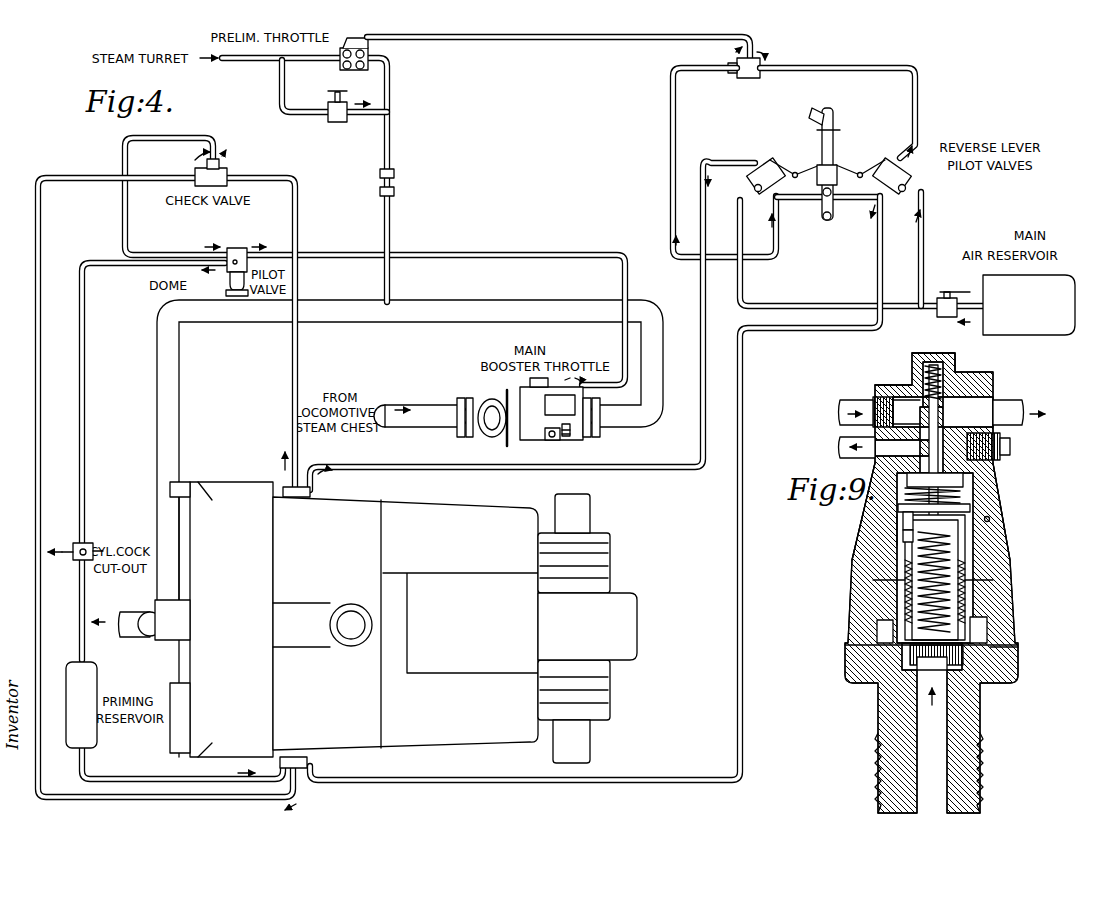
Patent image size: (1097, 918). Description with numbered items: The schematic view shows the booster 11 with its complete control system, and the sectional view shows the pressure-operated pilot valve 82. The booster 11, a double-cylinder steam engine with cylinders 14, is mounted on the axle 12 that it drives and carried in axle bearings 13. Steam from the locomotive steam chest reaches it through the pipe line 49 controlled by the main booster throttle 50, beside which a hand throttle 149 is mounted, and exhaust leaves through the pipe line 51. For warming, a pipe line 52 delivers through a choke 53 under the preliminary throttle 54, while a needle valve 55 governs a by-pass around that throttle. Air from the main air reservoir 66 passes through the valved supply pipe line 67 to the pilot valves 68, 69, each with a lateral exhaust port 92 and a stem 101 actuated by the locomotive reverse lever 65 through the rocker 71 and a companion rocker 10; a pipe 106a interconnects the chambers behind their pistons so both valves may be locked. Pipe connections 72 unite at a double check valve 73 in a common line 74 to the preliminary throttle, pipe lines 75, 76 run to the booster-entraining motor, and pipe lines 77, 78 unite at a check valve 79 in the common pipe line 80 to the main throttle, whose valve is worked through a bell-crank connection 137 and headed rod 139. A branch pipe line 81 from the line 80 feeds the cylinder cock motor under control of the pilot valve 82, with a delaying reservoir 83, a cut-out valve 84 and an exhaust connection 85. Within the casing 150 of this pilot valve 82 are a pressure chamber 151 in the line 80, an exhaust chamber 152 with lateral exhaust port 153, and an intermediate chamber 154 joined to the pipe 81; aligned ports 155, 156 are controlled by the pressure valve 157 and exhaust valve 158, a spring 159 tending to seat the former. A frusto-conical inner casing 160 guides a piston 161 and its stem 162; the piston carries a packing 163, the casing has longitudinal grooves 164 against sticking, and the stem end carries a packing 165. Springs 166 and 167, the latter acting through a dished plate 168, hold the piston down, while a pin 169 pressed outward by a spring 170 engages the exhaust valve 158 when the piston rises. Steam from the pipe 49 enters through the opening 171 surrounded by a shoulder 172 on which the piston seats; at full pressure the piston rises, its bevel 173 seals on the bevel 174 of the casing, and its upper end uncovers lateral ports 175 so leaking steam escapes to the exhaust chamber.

In FIG. 4, the reverse lever 10 is at (862, 162).
In FIG. 4, the booster 11 is at (484, 512).
In FIG. 4, the axle 12 is at (592, 509).
In FIG. 4, the axle bearings 13 is at (606, 560).
In FIG. 4, the cylinders 14 is at (208, 510).
In FIG. 4, the pipe line 49 is at (447, 302).
In FIG. 4, the main booster throttle 50 is at (548, 407).
In FIG. 4, the pipe line 51 is at (135, 628).
In FIG. 4, the pipe line 52 is at (258, 62).
In FIG. 4, the choke 53 is at (396, 180).
In FIG. 4, the preliminary throttle 54 is at (358, 61).
In FIG. 4, the needle valve 55 is at (337, 123).
In FIG. 4, the reverse lever 65 is at (824, 206).
In FIG. 4, the main air reservoir 66 is at (1025, 262).
In FIG. 4, the supply pipe line 67 is at (897, 305).
In FIG. 4, the pilot valve 68 is at (891, 160).
In FIG. 4, the pilot valve 69 is at (770, 165).
In FIG. 4, the rocker 71 is at (790, 165).
In FIG. 4, the pipe connections 72 is at (917, 99).
In FIG. 4, the double check valve 73 is at (751, 78).
In FIG. 4, the common line 74 is at (582, 42).
In FIG. 4, the pipe line 75 is at (737, 561).
In FIG. 4, the pipe line 76 is at (665, 469).
In FIG. 4, the pipe line 77 is at (37, 351).
In FIG. 4, the pipe line 78 is at (297, 206).
In FIG. 4, the check valve 79 is at (194, 172).
In FIG. 4, the common pipe line 80 is at (176, 138).
In FIG. 9, the common pipe line 80 is at (855, 398).
In FIG. 4, the branch pipe line 81 is at (131, 265).
In FIG. 9, the branch pipe line 81 is at (840, 447).
In FIG. 4, the pilot valve 82 is at (225, 272).
In FIG. 9, the pilot valve 82 is at (848, 668).
In FIG. 4, the reservoir 83 is at (72, 726).
In FIG. 4, the cut-out valve 84 is at (78, 562).
In FIG. 4, the exhaust connection 85 is at (74, 544).
In FIG. 4, the lateral exhaust port 92 is at (754, 186).
In FIG. 4, the stem 101 is at (884, 160).
In FIG. 4, the pipe 106a is at (845, 200).
In FIG. 4, the bell-crank connection 137 is at (551, 441).
In FIG. 4, the headed rod 139 is at (568, 437).
In FIG. 9, the headed rod 139 is at (934, 362).
In FIG. 4, the hand throttle 149 is at (506, 444).
In FIG. 9, the casing 150 is at (1012, 545).
In FIG. 9, the pressure chamber 151 is at (905, 393).
In FIG. 9, the exhaust chamber 152 is at (860, 535).
In FIG. 9, the lateral exhaust port 153 is at (1003, 515).
In FIG. 9, the intermediate chamber 154 is at (1010, 446).
In FIG. 9, the port 155 is at (870, 418).
In FIG. 9, the port 156 is at (905, 445).
In FIG. 9, the pressure valve 157 is at (958, 380).
In FIG. 9, the exhaust valve 158 is at (965, 480).
In FIG. 4, the helical compression spring 159 is at (952, 317).
In FIG. 9, the inner casing 160 is at (905, 575).
In FIG. 9, the piston 161 is at (877, 630).
In FIG. 9, the stem 162 is at (903, 521).
In FIG. 9, the peripheral packing 163 is at (967, 612).
In FIG. 9, the longitudinal grooves 164 is at (988, 632).
In FIG. 9, the packing 165 is at (990, 519).
In FIG. 9, the helical compression spring 166 is at (975, 582).
In FIG. 9, the helical compression spring 167 is at (963, 494).
In FIG. 9, the dished plate 168 is at (900, 508).
In FIG. 9, the pin 169 is at (905, 540).
In FIG. 9, the helical compression spring 170 is at (903, 658).
In FIG. 9, the opening 171 is at (930, 742).
In FIG. 9, the shoulder 172 is at (1018, 650).
In FIG. 9, the bevel 173 is at (903, 600).
In FIG. 9, the bevel 174 is at (875, 585).
In FIG. 9, the lateral ports 175 is at (897, 530).